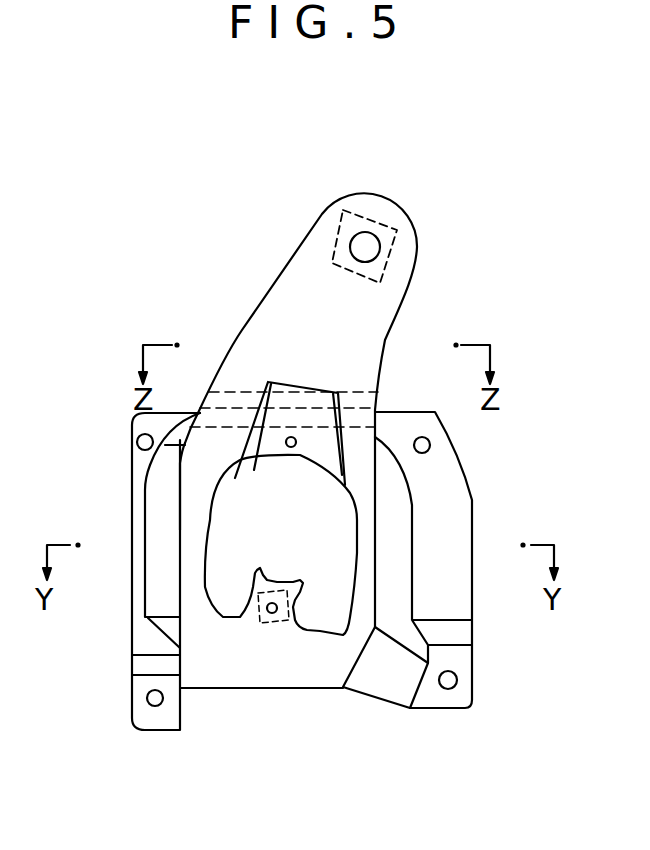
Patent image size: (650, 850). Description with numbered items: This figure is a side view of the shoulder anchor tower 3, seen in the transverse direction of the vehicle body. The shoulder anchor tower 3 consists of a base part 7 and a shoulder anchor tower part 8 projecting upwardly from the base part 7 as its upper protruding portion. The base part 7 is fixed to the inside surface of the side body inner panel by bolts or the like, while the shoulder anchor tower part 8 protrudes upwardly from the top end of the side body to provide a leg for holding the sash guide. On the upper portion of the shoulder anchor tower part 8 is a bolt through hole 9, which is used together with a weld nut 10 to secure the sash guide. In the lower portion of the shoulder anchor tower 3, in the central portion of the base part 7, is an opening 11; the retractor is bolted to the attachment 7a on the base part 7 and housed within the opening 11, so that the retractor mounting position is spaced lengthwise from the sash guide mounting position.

The shoulder anchor tower 3 is at (309, 410).
The base part 7 is at (397, 503).
The attachment 7a is at (255, 583).
The shoulder anchor tower part 8 is at (378, 315).
The bolt through hole 9 is at (372, 246).
The weld nut 10 is at (380, 210).
The opening 11 is at (350, 617).